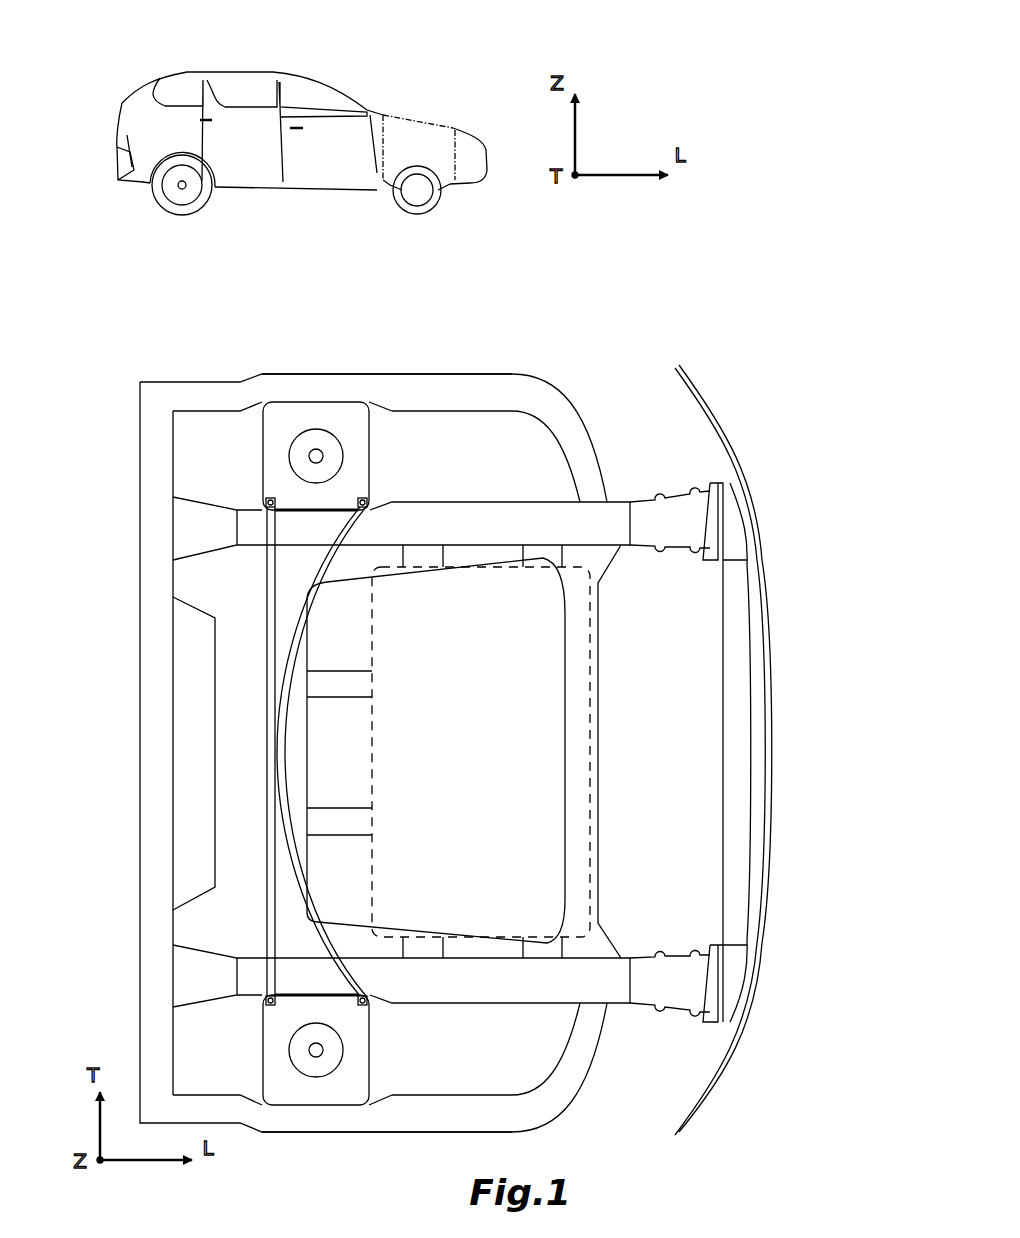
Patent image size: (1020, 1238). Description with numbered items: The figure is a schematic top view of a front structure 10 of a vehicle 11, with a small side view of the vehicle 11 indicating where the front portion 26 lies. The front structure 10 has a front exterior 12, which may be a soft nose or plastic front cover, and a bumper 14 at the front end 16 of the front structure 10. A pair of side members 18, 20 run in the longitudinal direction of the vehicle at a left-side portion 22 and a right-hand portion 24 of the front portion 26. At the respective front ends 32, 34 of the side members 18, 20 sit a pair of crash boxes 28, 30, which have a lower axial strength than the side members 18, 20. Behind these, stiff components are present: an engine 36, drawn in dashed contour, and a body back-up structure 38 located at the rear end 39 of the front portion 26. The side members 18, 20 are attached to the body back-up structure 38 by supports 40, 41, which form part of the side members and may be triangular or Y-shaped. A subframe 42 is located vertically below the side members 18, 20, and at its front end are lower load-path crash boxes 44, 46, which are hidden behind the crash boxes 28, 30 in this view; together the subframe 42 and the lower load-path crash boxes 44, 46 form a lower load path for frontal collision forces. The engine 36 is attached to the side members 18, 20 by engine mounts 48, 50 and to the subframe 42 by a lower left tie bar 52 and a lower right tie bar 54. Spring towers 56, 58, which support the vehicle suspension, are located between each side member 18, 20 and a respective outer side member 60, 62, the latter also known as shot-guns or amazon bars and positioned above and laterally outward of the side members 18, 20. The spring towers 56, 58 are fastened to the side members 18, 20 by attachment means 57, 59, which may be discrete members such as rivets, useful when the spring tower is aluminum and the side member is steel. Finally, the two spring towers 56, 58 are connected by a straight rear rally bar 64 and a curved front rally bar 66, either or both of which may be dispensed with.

The front structure 10 is at (406, 164).
The vehicle 11 is at (393, 66).
The front exterior 12 is at (763, 706).
The bumper 14 is at (737, 645).
The front end 16 is at (796, 586).
The side member 18 is at (476, 534).
The side member 20 is at (466, 990).
The left-side portion 22 is at (797, 655).
The right-hand portion 24 is at (795, 855).
The front portion 26 is at (460, 112).
The crash box 28 is at (683, 512).
The crash box 30 is at (670, 990).
The front end of side member 32 is at (618, 500).
The front end of side member 34 is at (617, 1003).
The engine 36 is at (448, 734).
The body back-up structure 38 is at (157, 812).
The rear end 39 is at (98, 688).
The support 40 is at (193, 522).
The support 41 is at (190, 985).
The subframe 42 is at (226, 712).
The lower load-path crash box 44 is at (680, 550).
The lower load-path crash box 46 is at (678, 950).
The engine mount 48 is at (540, 557).
The engine mount 50 is at (555, 940).
The lower left tie bar 52 is at (333, 684).
The lower right tie bar 54 is at (335, 818).
The spring tower 56 is at (345, 413).
The attachment means 57 is at (312, 507).
The spring tower 58 is at (353, 1030).
The attachment means 59 is at (300, 992).
The outer side member 60 is at (447, 398).
The outer side member 62 is at (414, 1102).
The straight rear rally bar 64 is at (272, 893).
The curved front rally bar 66 is at (320, 940).